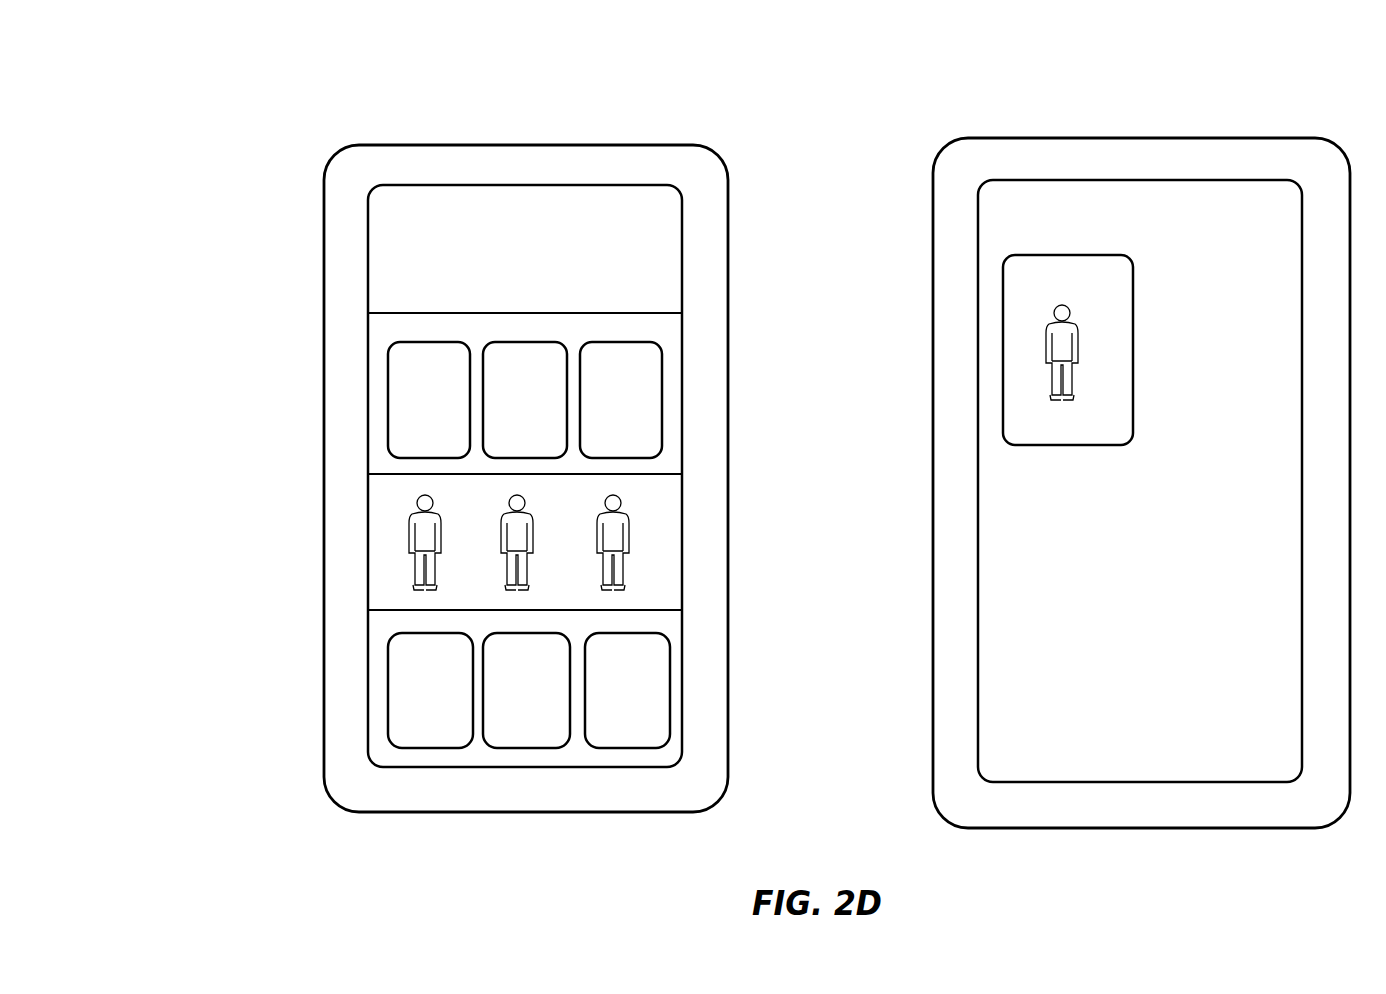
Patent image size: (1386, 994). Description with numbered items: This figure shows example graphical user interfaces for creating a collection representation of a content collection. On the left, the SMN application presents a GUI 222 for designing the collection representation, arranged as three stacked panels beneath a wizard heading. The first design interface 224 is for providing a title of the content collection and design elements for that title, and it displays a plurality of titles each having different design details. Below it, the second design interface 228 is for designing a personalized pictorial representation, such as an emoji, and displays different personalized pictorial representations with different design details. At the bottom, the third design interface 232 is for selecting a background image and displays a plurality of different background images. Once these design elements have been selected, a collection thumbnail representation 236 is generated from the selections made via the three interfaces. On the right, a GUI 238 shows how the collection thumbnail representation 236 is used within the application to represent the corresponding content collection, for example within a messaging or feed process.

The GUI 222 is at (340, 70).
The first design interface 224 is at (381, 383).
The second design interface 228 is at (385, 532).
The third design interface 232 is at (380, 663).
The collection thumbnail representation 236 is at (1068, 350).
The GUI 238 is at (1025, 68).